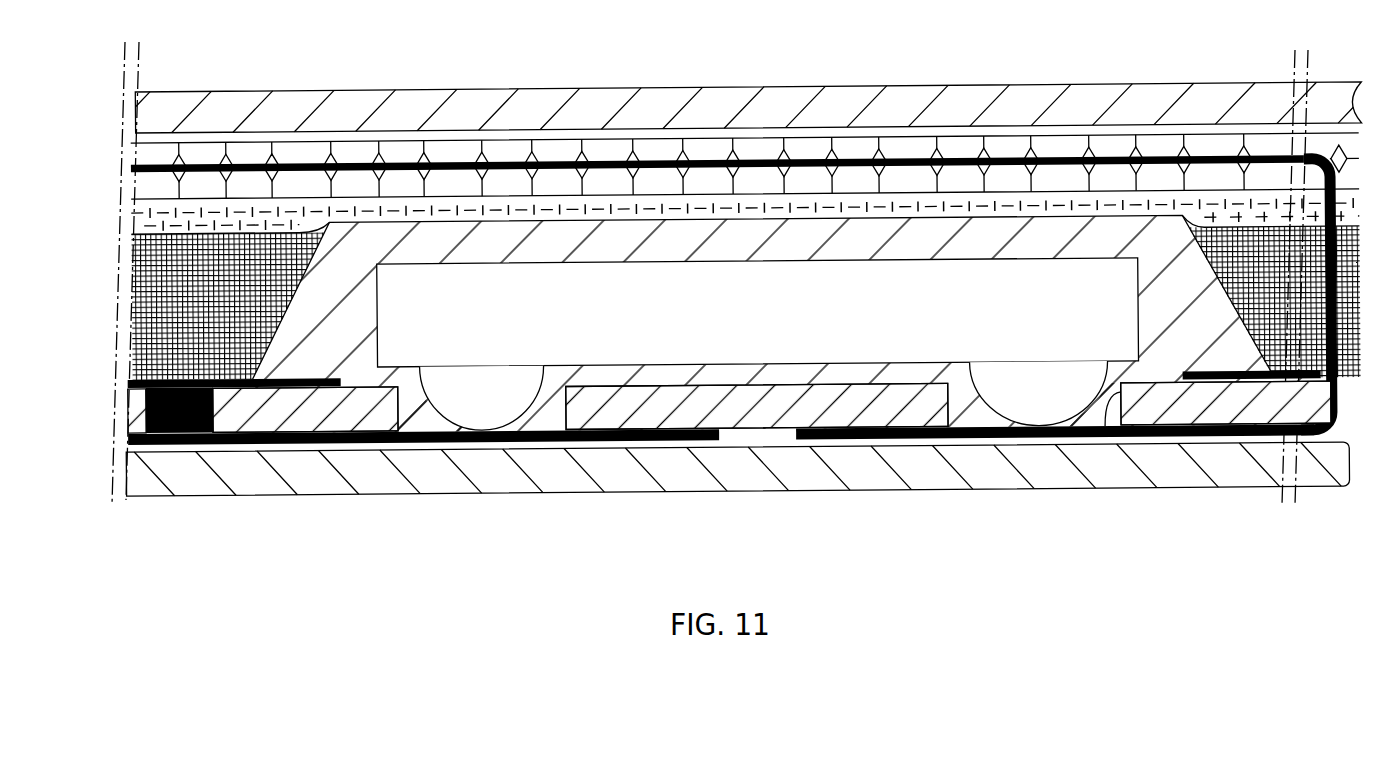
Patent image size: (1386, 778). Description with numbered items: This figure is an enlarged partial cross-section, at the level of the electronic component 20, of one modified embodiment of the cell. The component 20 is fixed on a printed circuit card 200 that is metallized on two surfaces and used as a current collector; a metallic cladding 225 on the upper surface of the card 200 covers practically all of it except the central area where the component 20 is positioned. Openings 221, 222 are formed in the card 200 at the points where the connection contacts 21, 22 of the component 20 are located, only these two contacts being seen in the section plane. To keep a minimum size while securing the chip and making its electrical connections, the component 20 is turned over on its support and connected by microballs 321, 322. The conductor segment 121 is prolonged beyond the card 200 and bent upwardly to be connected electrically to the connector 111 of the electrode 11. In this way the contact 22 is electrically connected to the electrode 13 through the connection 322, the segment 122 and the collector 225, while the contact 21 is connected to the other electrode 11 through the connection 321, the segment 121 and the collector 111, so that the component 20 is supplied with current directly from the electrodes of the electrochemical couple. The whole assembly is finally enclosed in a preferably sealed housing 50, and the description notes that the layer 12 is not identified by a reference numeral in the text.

The electrode 11 is at (860, 152).
The second layer (adhesive layer) 12 is at (1073, 200).
The electrode 13 is at (1273, 253).
The electronic component 20 is at (757, 308).
The connection contact 21 is at (958, 430).
The connection contact 22 is at (497, 433).
The housing 50 is at (650, 103).
The connector 111 is at (458, 165).
The conductor segment 121 is at (993, 442).
The conductor segment 122 is at (257, 447).
The printed circuit card 200 is at (342, 414).
The opening 221 is at (1115, 435).
The opening 222 is at (552, 433).
The metallic cladding 225 is at (172, 379).
The microball 321 is at (1050, 395).
The microball 322 is at (452, 400).